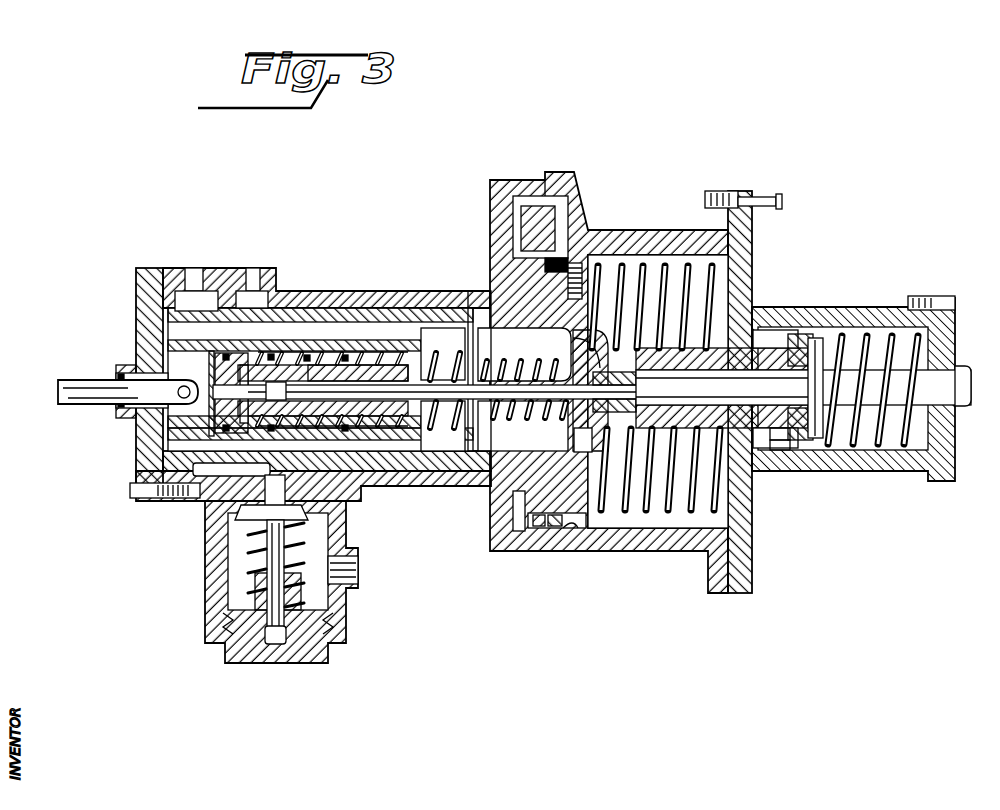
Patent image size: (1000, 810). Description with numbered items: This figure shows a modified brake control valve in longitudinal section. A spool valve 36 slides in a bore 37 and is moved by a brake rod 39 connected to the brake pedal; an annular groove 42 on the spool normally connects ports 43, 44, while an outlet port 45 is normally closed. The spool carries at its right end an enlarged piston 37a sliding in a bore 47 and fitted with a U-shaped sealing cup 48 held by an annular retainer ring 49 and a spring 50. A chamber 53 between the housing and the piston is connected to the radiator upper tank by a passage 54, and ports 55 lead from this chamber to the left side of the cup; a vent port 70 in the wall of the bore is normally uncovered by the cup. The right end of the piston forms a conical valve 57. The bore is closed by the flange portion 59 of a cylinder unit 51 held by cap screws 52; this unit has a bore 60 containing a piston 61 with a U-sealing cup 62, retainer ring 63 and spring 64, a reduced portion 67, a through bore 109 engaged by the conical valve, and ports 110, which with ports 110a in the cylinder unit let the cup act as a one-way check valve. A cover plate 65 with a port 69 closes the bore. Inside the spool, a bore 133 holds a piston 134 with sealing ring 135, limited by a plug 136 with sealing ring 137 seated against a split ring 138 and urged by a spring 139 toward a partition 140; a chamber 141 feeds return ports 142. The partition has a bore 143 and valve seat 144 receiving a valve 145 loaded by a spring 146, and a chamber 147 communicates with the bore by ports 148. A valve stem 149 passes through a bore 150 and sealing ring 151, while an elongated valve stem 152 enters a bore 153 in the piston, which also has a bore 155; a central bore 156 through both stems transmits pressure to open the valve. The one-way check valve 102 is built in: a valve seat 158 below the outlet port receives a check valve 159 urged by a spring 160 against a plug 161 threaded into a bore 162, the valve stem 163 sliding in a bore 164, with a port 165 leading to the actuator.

The spool valve 36 is at (385, 467).
The bore 37 is at (350, 470).
The enlarged piston 37a is at (532, 530).
The brake rod 39 is at (75, 372).
The annular groove 42 is at (198, 455).
The port 43 is at (245, 268).
The port 44 is at (180, 262).
The outlet port 45 is at (192, 495).
The bore 47 is at (645, 520).
The U-shaped sealing cup 48 is at (555, 522).
The annular retainer ring 49 is at (565, 262).
The spring 50 is at (612, 262).
The cylinder unit 51 is at (757, 271).
The cap screws 52 is at (774, 194).
The chamber 53 is at (505, 510).
The passage 54 is at (505, 198).
The ports 55 is at (520, 532).
The conical valve 57 is at (582, 345).
The flange portion 59 is at (722, 183).
The bore 60 is at (848, 320).
The piston 61 is at (753, 312).
The U-sealing cup 62 is at (795, 328).
The retainer ring 63 is at (808, 432).
The spring 64 is at (860, 442).
The cover plate 65 is at (918, 296).
The portion of reduced diameter 67 is at (722, 388).
The port 69 is at (950, 372).
The vent port 70 is at (576, 206).
The one-way check valve 102 is at (143, 527).
The bore 109 is at (803, 387).
The ports 110 is at (785, 430).
The ports 110a is at (748, 445).
The bore 133 is at (355, 352).
The piston 134 is at (340, 350).
The sealing ring 135 is at (270, 352).
The plug 136 is at (210, 370).
The sealing ring 137 is at (206, 415).
The split ring 138 is at (196, 299).
The spring 139 is at (400, 358).
The partition 140 is at (468, 345).
The chamber 141 is at (433, 322).
The ports 142 is at (160, 333).
The bore 143 is at (466, 340).
The valve seat 144 is at (442, 427).
The valve 145 is at (525, 426).
The spring 146 is at (525, 365).
The chamber 147 is at (541, 451).
The ports 148 is at (568, 437).
The valve stem 149 is at (615, 394).
The bore 150 is at (615, 370).
The sealing ring 151 is at (578, 362).
The elongated valve stem 152 is at (368, 420).
The bore 153 is at (298, 352).
The bore 155 is at (255, 382).
The centrally located bore 156 is at (440, 392).
The valve seat 158 is at (235, 505).
The check valve 159 is at (265, 522).
The spring 160 is at (240, 580).
The plug 161 is at (228, 655).
The bore 162 is at (315, 585).
The valve stem 163 is at (325, 640).
The bore 164 is at (267, 636).
The port 165 is at (352, 560).